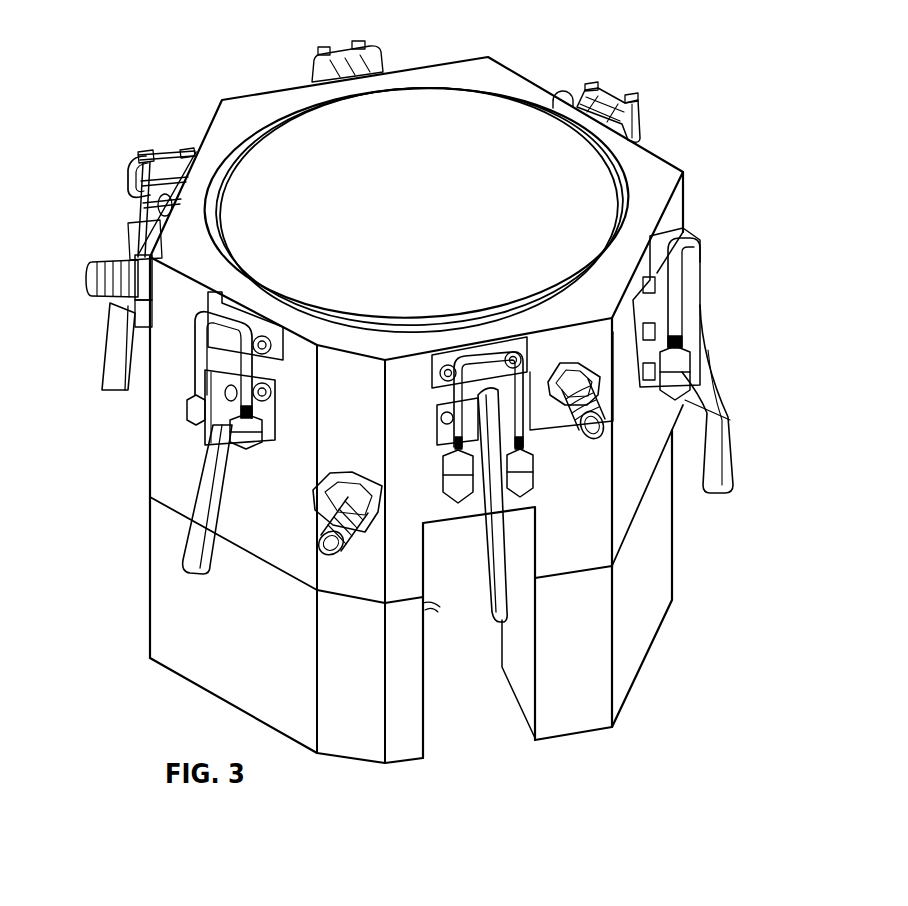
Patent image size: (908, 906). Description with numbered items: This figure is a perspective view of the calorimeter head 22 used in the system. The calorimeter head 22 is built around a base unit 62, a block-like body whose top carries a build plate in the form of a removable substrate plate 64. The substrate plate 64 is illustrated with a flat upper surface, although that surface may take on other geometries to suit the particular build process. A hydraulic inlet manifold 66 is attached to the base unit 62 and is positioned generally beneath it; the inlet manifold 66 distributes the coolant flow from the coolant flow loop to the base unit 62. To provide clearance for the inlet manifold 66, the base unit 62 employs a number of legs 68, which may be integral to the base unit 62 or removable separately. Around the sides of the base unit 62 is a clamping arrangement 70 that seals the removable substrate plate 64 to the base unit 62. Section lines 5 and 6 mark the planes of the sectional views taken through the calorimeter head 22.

The calorimeter head 22 is at (478, 412).
The section line 5- 5 is at (430, 192).
The section line 6- 6 is at (140, 150).
The base unit 62 is at (448, 331).
The removable substrate plate 64 is at (493, 121).
The hydraulic inlet manifold 66 is at (445, 570).
The legs 68 is at (648, 614).
The clamping arrangement 70 is at (722, 326).